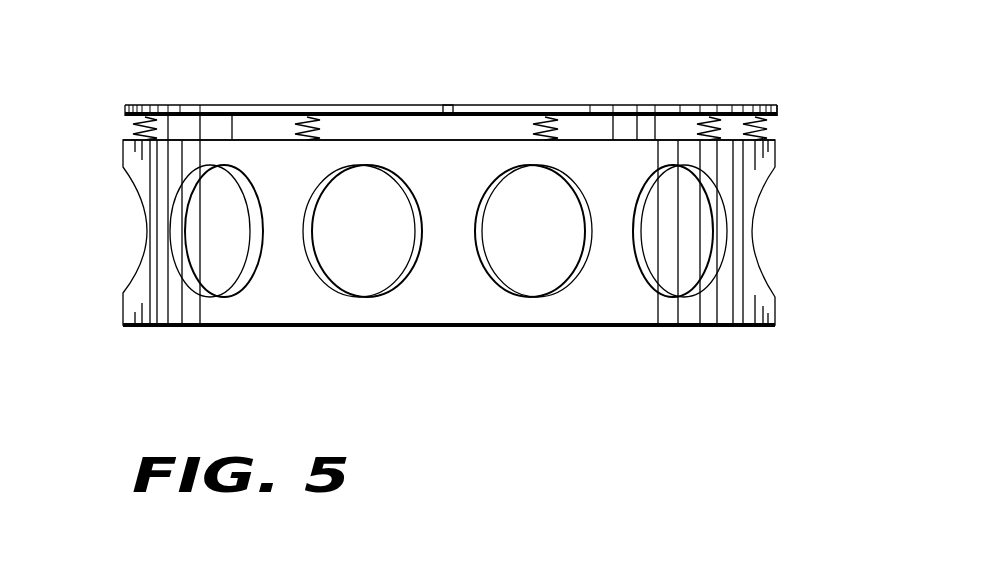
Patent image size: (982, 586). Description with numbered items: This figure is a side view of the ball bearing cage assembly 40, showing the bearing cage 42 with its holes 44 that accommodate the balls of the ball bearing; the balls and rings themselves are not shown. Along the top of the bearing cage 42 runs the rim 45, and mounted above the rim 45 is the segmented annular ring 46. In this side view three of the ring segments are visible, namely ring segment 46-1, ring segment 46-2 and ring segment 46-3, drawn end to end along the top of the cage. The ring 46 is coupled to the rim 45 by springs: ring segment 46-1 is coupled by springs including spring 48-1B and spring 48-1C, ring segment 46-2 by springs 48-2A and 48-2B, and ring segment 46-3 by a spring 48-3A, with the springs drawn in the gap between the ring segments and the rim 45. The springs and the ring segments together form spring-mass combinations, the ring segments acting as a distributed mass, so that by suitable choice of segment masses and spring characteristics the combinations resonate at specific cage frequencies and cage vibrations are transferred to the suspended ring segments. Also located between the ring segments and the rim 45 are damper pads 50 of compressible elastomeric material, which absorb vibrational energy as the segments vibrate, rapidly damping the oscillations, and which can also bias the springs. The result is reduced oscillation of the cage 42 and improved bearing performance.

The ball bearing cage assembly 40 is at (455, 220).
The bearing cage 42 is at (599, 313).
The holes 44 is at (240, 244).
The rim 45 is at (425, 139).
The segmented annular ring 46 is at (673, 103).
The ring segment 46-1 is at (282, 104).
The ring segment 46-2 is at (560, 104).
The ring segment 46-3 is at (766, 102).
The spring 48-1B is at (133, 122).
The spring 48-1C is at (318, 123).
The spring 48-2A is at (535, 121).
The spring 48-2B is at (723, 104).
The spring 48-3A is at (758, 132).
The damper pads 50 is at (212, 129).